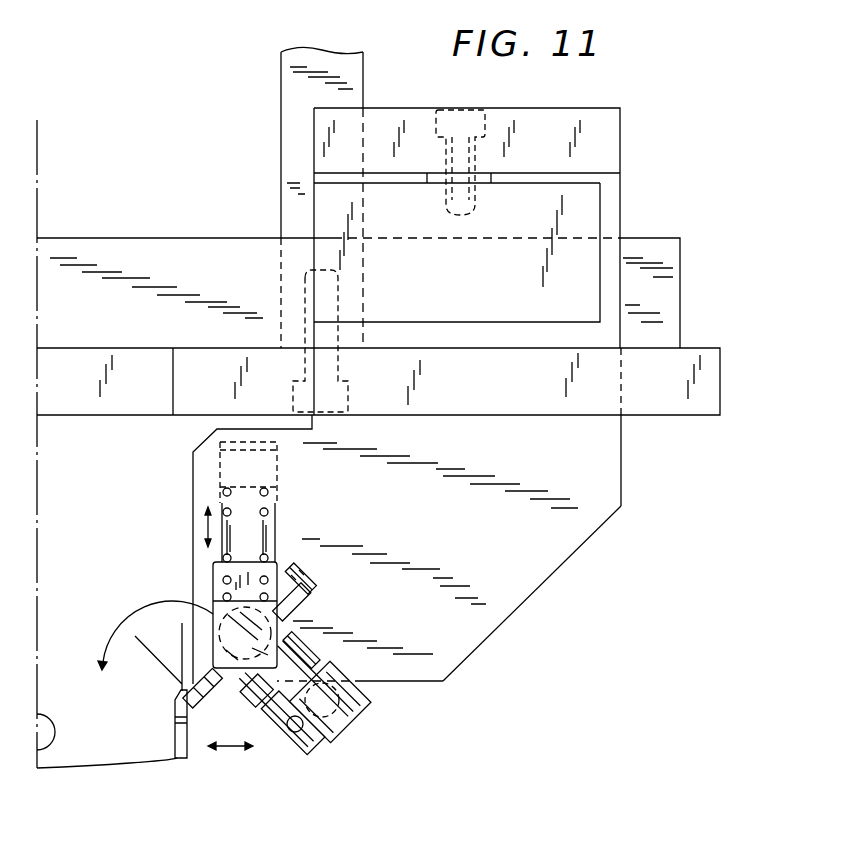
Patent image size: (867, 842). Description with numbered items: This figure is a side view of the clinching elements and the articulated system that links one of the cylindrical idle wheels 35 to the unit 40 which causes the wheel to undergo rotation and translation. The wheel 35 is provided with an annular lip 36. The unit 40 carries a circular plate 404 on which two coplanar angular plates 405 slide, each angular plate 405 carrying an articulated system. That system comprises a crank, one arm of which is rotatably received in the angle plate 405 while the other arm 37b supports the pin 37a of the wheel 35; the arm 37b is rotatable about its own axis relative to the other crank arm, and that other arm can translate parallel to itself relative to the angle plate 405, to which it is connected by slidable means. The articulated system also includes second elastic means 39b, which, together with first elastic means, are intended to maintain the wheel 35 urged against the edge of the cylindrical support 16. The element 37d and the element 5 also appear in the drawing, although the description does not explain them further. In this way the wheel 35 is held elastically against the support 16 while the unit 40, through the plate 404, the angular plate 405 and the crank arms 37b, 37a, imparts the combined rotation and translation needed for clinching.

The circular plate 404 is at (722, 348).
The unit 40 is at (432, 549).
The angular plate 405 is at (510, 619).
The second elastic means 39b is at (222, 509).
The vertical slider 37d is at (272, 525).
The idle wheel 35 is at (298, 562).
The annular lip 36 is at (317, 581).
The optical fiber 5 is at (152, 654).
The cylindrical support 16 is at (177, 706).
The crank arm 37b is at (363, 698).
The pin 37a is at (340, 724).